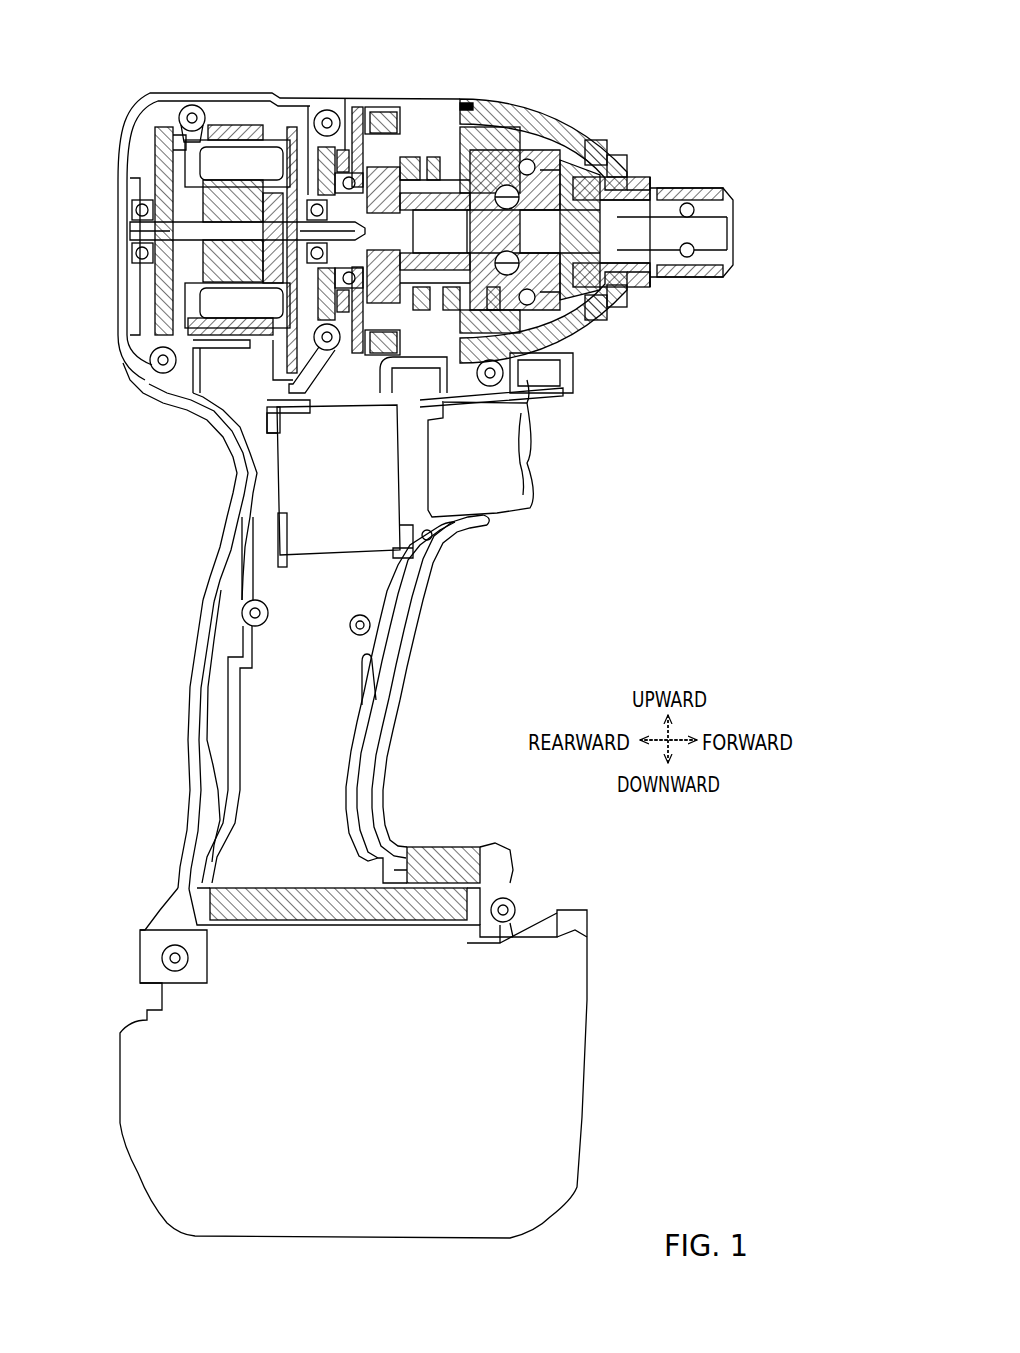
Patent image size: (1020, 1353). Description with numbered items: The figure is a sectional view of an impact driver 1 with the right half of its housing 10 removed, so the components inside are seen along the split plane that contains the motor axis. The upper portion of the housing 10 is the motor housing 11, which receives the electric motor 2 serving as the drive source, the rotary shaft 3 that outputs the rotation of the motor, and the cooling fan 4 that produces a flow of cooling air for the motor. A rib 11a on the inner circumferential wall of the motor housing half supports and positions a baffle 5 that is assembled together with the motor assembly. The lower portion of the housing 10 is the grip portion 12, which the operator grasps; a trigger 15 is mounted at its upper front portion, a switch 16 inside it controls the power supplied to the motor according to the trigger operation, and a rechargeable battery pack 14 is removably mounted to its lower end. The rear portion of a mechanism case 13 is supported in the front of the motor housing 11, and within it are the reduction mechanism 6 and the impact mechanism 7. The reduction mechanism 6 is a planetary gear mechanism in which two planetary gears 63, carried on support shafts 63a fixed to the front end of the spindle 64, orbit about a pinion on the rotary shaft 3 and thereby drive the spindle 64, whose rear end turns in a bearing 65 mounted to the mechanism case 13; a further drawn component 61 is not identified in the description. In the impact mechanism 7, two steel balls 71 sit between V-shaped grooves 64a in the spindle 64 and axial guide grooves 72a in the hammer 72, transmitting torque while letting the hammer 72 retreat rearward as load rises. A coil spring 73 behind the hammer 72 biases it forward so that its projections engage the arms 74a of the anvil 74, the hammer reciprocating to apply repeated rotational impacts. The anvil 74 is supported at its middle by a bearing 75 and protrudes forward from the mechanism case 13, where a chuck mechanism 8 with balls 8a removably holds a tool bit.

The impact driver 1 is at (128, 563).
The electric motor 2 is at (237, 118).
The rotary shaft 3 is at (140, 230).
The cooling fan 4 is at (152, 160).
The baffle 5 is at (183, 147).
The reduction mechanism 6 is at (422, 145).
The impact mechanism 7 is at (535, 130).
The chuck mechanism 8 is at (692, 184).
The balls 8a is at (692, 213).
The housing 10 is at (176, 411).
The motor housing 11 is at (160, 112).
The rib 11a is at (188, 112).
The grip portion 12 is at (203, 684).
The mechanism case 13 is at (354, 127).
The battery pack 14 is at (522, 1043).
The trigger 15 is at (512, 480).
The switch 16 is at (318, 473).
The pinion gear 61 is at (394, 176).
The planetary gears 63 is at (377, 120).
The support shafts 63a is at (376, 128).
The spindle 64 is at (484, 232).
The V-shaped grooves 64a is at (470, 150).
The bearing 65 is at (343, 158).
The steel balls 71 is at (497, 185).
The hammer 72 is at (512, 150).
The guide grooves 72a is at (560, 170).
The coil spring 73 is at (432, 158).
The anvil 74 is at (608, 183).
The arms 74a is at (580, 160).
The bearing 75 is at (602, 163).